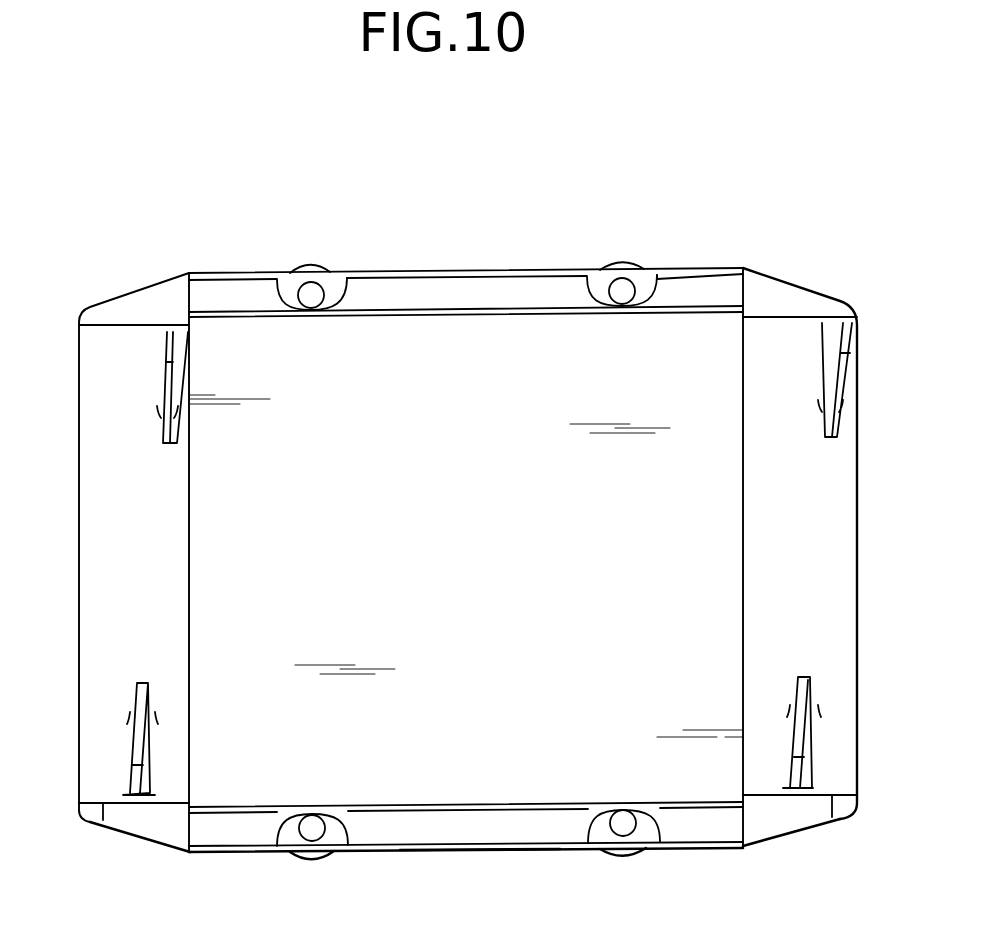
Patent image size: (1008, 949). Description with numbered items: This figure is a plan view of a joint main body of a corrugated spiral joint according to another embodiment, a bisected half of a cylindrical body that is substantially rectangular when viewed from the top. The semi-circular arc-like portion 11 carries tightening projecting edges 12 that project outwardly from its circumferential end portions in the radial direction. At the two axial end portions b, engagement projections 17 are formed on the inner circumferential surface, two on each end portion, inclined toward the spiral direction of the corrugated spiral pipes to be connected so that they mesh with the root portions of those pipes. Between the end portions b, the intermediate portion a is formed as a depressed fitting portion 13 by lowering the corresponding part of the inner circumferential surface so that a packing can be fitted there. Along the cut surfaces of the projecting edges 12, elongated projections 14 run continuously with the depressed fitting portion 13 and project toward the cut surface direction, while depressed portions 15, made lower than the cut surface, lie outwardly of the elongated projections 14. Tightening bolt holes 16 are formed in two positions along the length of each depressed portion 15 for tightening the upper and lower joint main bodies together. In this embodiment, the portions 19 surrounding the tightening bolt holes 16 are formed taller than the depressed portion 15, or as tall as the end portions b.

The semi-circular arc-like portion 11 is at (827, 545).
The tightening projecting edge 12 is at (287, 270).
The depressed fitting portion 13 is at (225, 332).
The elongated projection 14 is at (400, 308).
The depressed portion 15 is at (500, 293).
The tightening bolt hole 16 is at (632, 290).
The engagement projection 17 is at (170, 388).
The portion surrounding the tightening bolt hole 19 is at (602, 283).
The intermediate portion a is at (535, 852).
The axial end portion b is at (157, 827).